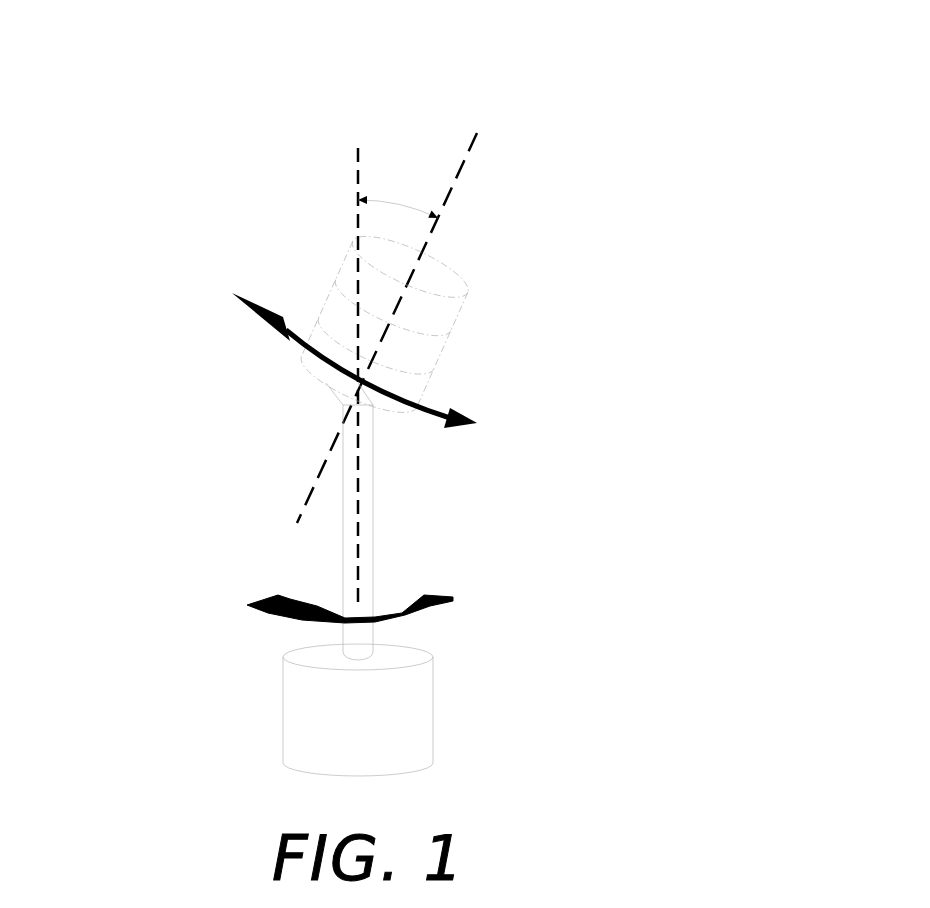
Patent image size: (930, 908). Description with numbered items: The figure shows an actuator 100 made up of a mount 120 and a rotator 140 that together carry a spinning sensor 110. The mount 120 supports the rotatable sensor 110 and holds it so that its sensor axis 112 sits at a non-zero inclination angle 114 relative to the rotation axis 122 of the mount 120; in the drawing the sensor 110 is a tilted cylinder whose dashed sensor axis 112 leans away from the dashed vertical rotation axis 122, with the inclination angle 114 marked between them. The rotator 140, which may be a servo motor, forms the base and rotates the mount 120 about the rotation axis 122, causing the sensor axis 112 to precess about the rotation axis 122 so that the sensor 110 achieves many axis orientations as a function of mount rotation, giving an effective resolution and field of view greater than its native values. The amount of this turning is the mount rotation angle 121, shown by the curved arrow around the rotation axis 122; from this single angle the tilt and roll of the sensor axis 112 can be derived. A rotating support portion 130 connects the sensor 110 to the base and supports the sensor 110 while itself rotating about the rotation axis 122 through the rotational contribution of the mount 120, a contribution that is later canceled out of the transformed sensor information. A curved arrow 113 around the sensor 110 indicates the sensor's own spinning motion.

The actuator 100 is at (117, 184).
The sensor 110 is at (438, 262).
The sensor axis 112 is at (470, 157).
The rotation of antenna about tilted axis (θs) 113 is at (458, 418).
The inclination angle 114 is at (400, 200).
The mount 120 is at (260, 384).
The mount rotation angle 121 is at (247, 607).
The rotation axis 122 is at (357, 173).
The rotating support portion 130 is at (343, 463).
The rotator 140 is at (428, 670).